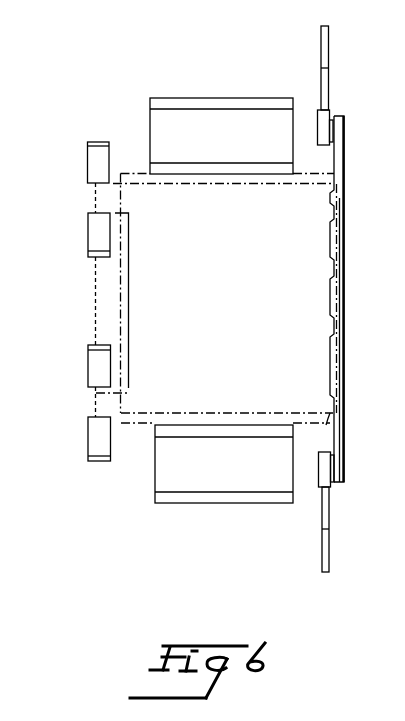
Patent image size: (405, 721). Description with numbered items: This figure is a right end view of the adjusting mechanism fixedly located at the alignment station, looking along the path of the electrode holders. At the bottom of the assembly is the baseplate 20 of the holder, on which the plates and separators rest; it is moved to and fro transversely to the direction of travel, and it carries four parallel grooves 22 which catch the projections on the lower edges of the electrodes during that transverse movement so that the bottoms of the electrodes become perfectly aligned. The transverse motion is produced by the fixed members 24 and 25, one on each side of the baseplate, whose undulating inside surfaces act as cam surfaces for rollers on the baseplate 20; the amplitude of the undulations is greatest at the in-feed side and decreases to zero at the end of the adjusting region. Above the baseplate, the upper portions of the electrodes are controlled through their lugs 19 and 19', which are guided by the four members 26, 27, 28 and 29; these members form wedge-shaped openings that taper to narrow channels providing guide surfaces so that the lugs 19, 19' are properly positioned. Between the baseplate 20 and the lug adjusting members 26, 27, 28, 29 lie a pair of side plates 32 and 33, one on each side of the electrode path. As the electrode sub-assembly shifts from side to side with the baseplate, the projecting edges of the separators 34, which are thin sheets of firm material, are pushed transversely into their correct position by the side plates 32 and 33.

The lugs 19 is at (72, 337).
The lugs 19' is at (69, 197).
The baseplate 20 is at (335, 156).
The parallel grooves 22 is at (340, 214).
The fixed member 24 is at (330, 553).
The fixed member 25 is at (329, 50).
The lug adjusting member 26 is at (100, 462).
The lug adjusting member 27 is at (100, 344).
The lug adjusting member 28 is at (98, 258).
The lug adjusting member 29 is at (97, 142).
The side plate 32 is at (223, 493).
The side plate 33 is at (222, 114).
The separators 34 is at (328, 425).